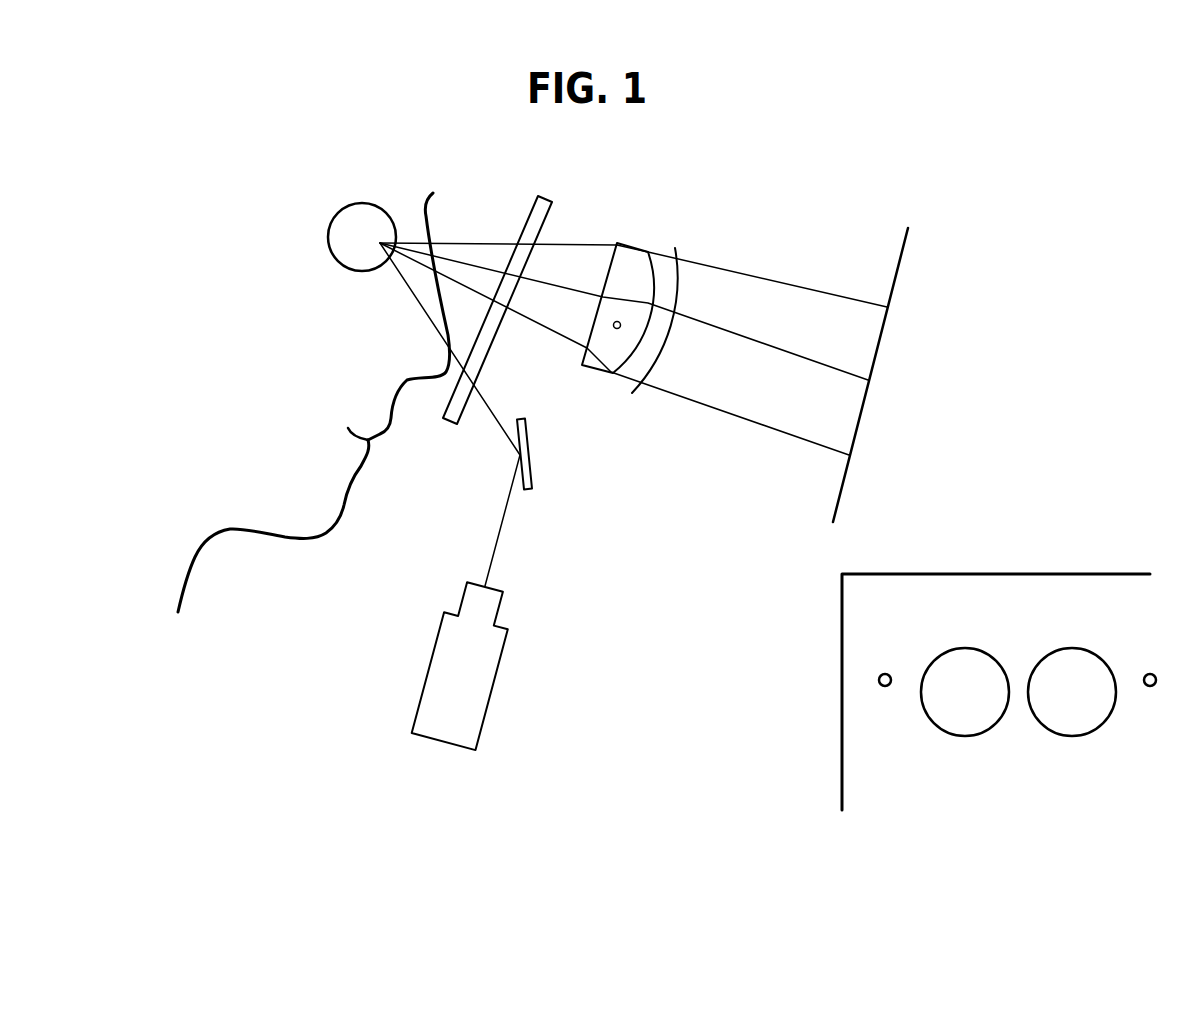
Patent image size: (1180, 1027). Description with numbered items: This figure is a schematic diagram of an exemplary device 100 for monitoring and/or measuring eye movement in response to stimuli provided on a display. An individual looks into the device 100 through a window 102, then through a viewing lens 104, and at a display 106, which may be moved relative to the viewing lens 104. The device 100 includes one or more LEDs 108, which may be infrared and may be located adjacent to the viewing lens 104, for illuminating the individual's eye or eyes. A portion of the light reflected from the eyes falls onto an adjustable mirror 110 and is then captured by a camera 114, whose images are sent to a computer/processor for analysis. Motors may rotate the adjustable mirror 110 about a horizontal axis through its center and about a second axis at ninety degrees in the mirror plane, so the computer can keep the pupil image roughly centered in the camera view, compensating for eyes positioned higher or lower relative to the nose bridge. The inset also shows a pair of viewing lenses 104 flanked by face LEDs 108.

The device 100 is at (270, 698).
The window 102 is at (541, 199).
The viewing lens 104 is at (637, 250).
The display 106 is at (903, 260).
The LED 108 is at (615, 329).
The adjustable mirror 110 is at (533, 467).
The camera 114 is at (475, 712).